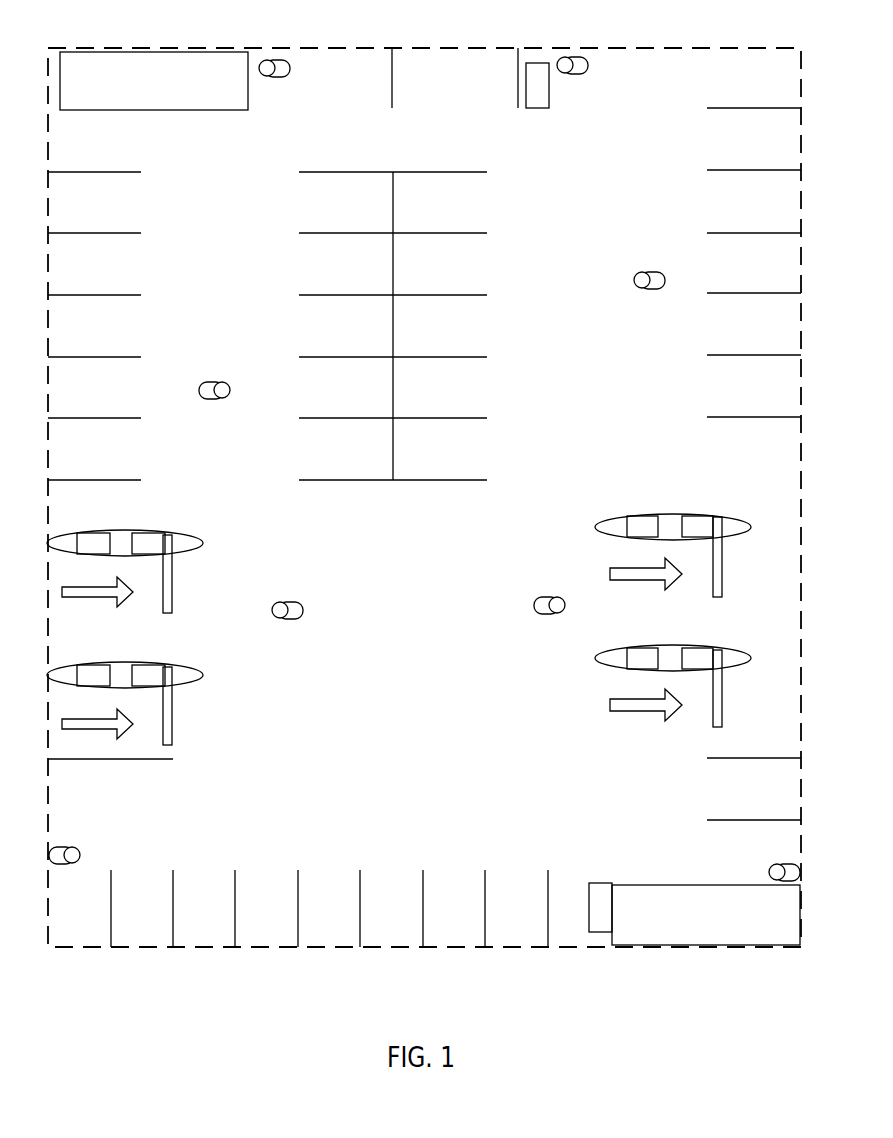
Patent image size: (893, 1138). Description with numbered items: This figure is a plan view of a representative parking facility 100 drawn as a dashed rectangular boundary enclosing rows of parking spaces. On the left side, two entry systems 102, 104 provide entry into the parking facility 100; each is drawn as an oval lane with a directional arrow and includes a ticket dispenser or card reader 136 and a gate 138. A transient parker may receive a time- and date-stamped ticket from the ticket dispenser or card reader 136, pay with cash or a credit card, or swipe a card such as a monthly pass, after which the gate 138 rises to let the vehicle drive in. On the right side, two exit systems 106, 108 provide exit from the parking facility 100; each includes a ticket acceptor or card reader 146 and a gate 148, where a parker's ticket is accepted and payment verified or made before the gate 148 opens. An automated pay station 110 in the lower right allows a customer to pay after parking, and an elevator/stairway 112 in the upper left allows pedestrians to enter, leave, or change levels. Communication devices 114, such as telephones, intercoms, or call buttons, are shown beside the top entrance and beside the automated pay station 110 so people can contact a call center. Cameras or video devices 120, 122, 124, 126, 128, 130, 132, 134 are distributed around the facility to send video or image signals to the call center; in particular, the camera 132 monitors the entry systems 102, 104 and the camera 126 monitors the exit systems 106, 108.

The parking facility 100 is at (360, 42).
The entry system 102 is at (182, 530).
The entry system 104 is at (182, 662).
The exit system 106 is at (732, 513).
The exit system 108 is at (732, 645).
The automated pay station 110 is at (762, 936).
The elevator/stairway 112 is at (233, 103).
The communication device 114 is at (538, 62).
The camera 120 is at (271, 58).
The camera 122 is at (222, 381).
The camera 124 is at (649, 271).
The camera 126 is at (552, 596).
The camera 128 is at (63, 846).
The camera 130 is at (784, 863).
The camera 132 is at (286, 601).
The camera 134 is at (571, 56).
The ticket dispenser or card reader 136 is at (95, 533).
The gate 138 is at (174, 576).
The ticket acceptor or card reader 146 is at (645, 516).
The gate 148 is at (724, 557).